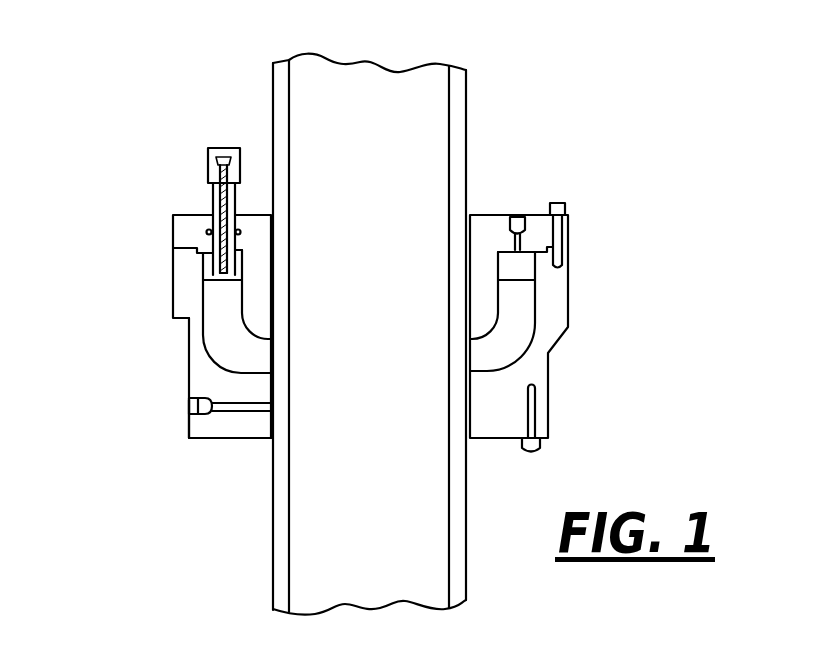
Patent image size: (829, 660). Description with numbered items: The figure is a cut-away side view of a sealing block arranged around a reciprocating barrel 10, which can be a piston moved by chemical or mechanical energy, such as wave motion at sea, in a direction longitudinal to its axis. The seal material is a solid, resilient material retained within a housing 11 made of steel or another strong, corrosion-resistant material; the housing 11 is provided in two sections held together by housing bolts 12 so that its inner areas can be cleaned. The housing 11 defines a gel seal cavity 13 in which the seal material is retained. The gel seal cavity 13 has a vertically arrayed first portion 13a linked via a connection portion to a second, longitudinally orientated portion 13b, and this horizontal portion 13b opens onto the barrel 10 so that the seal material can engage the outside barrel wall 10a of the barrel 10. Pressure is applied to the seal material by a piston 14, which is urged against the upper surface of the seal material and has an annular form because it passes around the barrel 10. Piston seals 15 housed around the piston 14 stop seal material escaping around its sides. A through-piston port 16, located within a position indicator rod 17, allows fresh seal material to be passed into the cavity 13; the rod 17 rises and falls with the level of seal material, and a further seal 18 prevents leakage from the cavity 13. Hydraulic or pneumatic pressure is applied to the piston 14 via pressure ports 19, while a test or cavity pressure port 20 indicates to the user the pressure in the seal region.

The barrel 10 is at (328, 318).
The barrel wall 10a is at (275, 102).
The housing 11 is at (183, 231).
The housing bolts 12 is at (565, 207).
The gel seal cavity 13 is at (213, 330).
The first portion 13a is at (212, 312).
The second portion 13b is at (242, 353).
The piston 14 is at (205, 279).
The piston seals 15 is at (533, 262).
The through-piston port 16 is at (157, 168).
The position indicator rod 17 is at (207, 176).
The further seal 18 is at (207, 233).
The pressure ports 19 is at (517, 217).
The cavity pressure port 20 is at (195, 414).